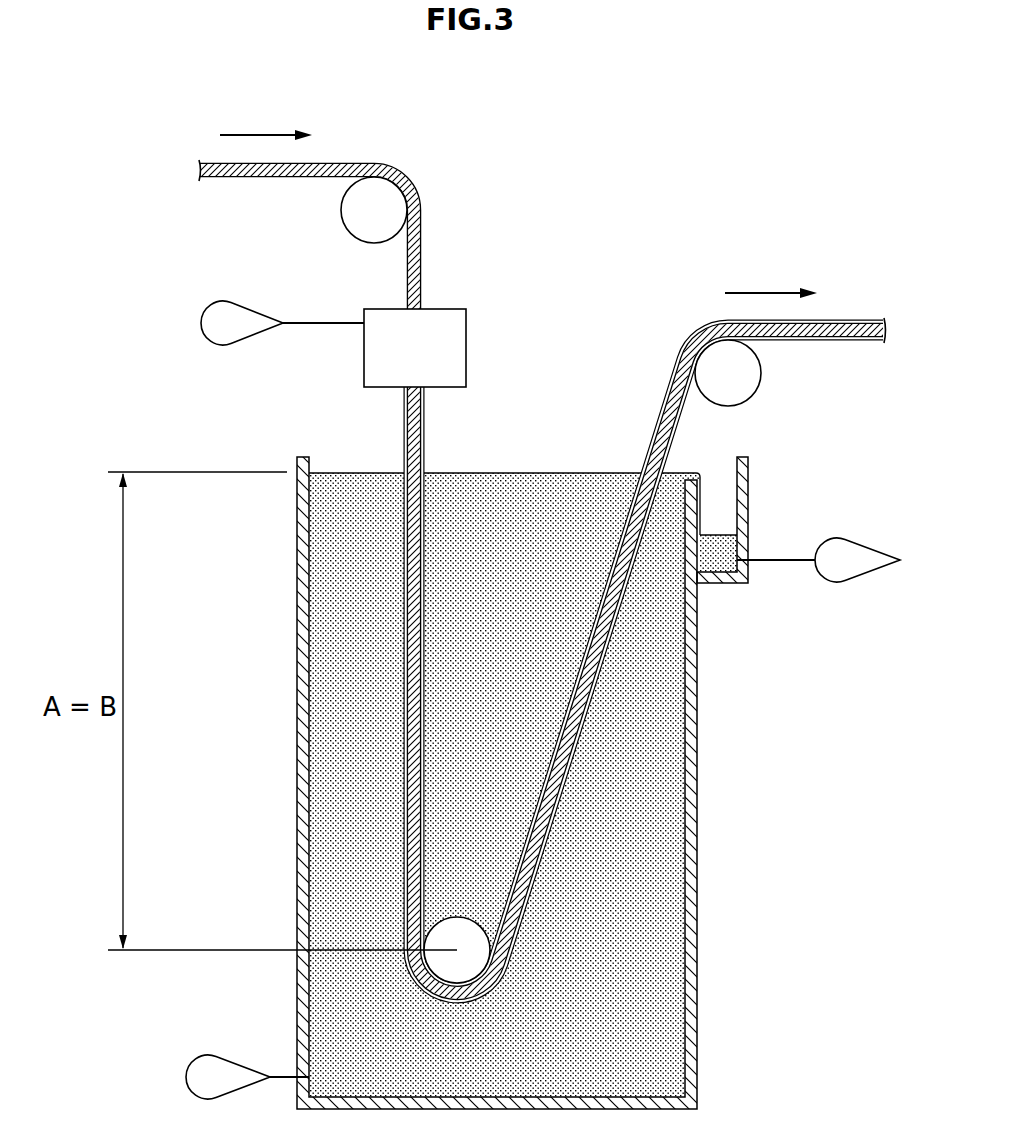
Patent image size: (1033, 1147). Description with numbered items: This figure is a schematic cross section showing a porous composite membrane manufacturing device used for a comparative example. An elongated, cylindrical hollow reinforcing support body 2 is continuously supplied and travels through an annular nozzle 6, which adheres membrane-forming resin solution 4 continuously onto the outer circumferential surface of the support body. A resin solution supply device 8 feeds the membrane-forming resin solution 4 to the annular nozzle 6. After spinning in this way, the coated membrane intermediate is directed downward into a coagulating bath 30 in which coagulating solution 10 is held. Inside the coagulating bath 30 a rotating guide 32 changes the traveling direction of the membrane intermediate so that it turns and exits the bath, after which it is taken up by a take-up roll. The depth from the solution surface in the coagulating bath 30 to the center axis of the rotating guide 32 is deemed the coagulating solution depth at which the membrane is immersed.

The hollow reinforcing support body 2 is at (358, 163).
The membrane-forming resin solution 4 is at (425, 437).
The annular nozzle 6 is at (445, 309).
The resin solution supply device 8 is at (213, 322).
The coagulating solution 10 is at (632, 825).
The coagulating bath 30 is at (298, 720).
The rotating guide 32 is at (480, 935).